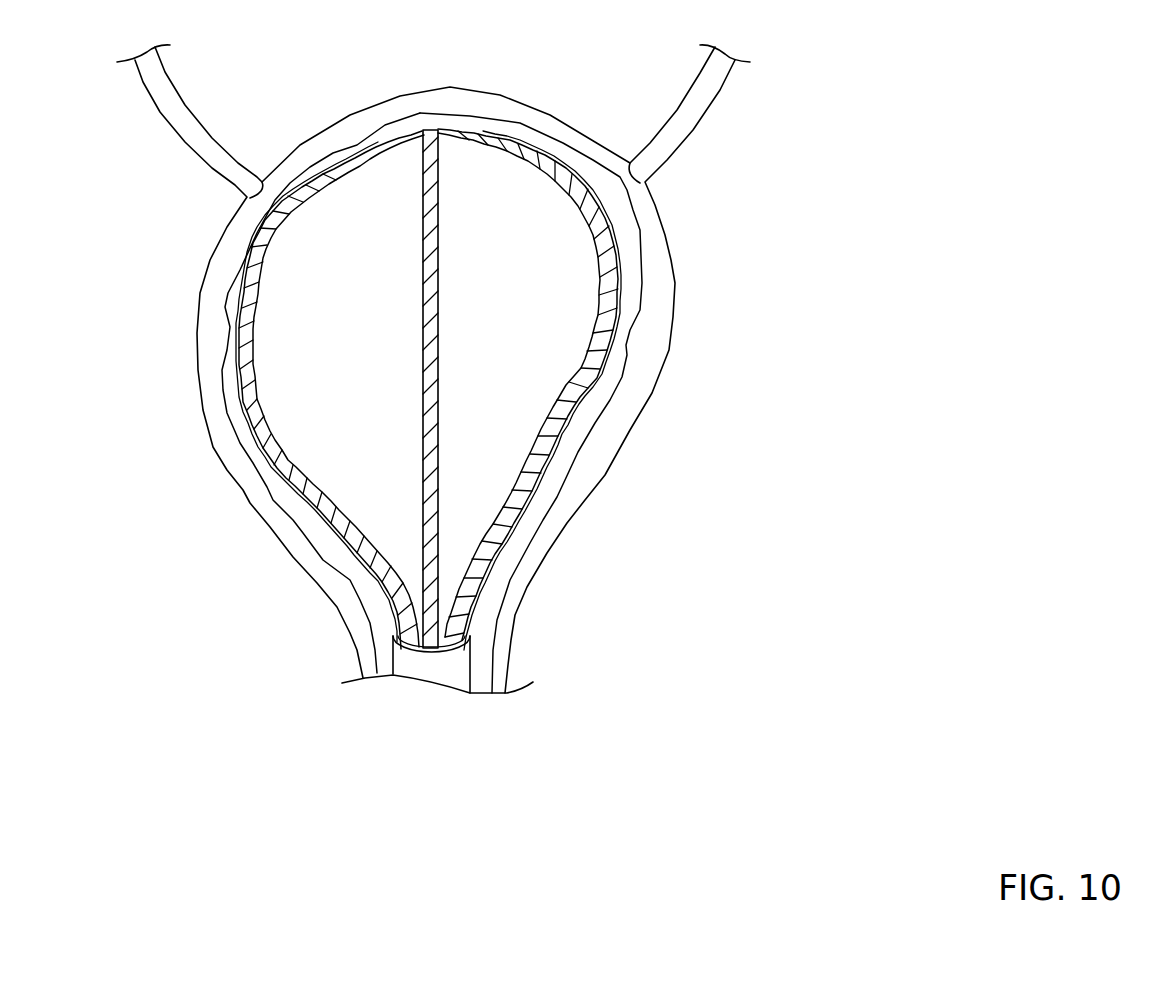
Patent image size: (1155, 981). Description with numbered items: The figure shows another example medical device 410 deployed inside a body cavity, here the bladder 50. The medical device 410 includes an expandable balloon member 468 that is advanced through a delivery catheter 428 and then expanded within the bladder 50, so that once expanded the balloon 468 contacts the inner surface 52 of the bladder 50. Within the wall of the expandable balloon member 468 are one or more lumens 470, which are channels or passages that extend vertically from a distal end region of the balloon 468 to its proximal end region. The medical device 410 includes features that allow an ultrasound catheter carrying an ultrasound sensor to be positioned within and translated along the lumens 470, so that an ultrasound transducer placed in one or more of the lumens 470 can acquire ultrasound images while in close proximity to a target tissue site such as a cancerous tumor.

The bladder 50 is at (777, 249).
The inner surface 52 is at (547, 510).
The medical device 410 is at (620, 211).
The delivery catheter 428 is at (447, 670).
The expandable balloon member 468 is at (563, 315).
The lumens 470 is at (437, 182).